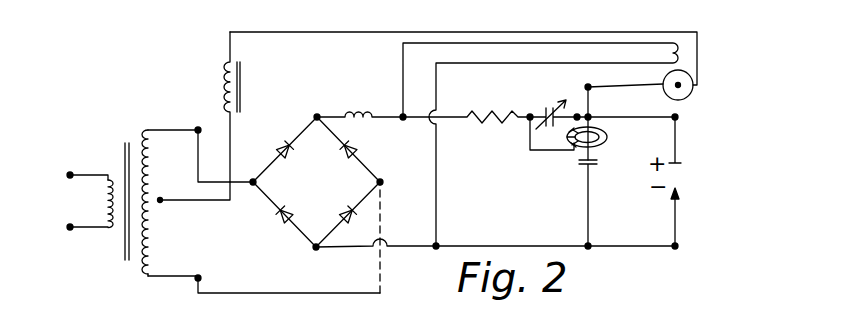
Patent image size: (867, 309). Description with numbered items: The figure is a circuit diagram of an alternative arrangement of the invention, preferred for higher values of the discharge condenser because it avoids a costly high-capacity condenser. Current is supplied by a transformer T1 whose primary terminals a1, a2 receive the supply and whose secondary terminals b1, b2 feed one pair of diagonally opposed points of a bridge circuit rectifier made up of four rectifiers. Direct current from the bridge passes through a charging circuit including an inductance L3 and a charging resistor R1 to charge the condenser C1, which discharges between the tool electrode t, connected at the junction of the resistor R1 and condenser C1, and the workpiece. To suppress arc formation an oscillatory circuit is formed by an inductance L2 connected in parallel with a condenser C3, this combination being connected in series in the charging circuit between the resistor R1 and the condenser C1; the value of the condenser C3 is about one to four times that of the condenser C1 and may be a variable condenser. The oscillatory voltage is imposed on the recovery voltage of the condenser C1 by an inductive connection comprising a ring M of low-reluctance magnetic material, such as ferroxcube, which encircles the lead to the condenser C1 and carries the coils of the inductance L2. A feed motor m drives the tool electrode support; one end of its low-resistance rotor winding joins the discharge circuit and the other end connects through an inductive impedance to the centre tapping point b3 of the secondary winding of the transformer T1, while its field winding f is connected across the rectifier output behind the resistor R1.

The transformer T1 is at (128, 194).
The primary terminal a1 is at (87, 165).
The primary terminal a2 is at (87, 237).
The secondary terminal b1 is at (200, 150).
The secondary terminal b2 is at (264, 237).
The tapping point b3 is at (194, 190).
The inductive impedance L2 is at (578, 148).
The inductance L3 is at (360, 100).
The charging resistor R1 is at (466, 101).
The condenser C3 is at (553, 103).
The condenser C1 is at (599, 203).
The ring of magnetically conductive material M is at (609, 138).
The field winding f is at (688, 53).
The feed motor m is at (689, 98).
The tool electrode t is at (682, 214).